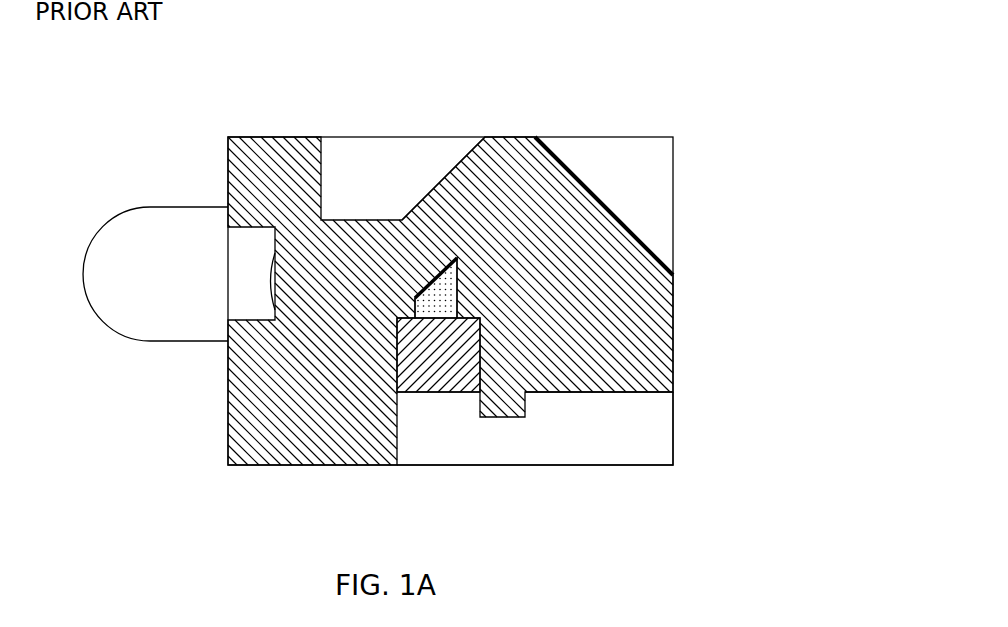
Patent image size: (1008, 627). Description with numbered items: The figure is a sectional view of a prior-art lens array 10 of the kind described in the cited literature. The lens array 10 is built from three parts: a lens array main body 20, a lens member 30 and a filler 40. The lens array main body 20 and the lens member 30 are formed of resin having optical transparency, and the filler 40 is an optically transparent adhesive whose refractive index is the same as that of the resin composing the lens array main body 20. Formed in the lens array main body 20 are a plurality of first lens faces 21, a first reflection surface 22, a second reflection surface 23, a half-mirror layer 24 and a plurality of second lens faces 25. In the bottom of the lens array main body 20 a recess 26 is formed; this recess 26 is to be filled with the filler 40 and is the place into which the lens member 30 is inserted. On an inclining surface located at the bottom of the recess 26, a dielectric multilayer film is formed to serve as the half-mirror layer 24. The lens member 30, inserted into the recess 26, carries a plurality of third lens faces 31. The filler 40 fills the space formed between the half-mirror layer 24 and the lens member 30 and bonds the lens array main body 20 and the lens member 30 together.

The lens array 10 is at (611, 86).
The lens array main body 20 is at (497, 137).
The first lens faces 21 is at (584, 393).
The first reflection surface 22 is at (627, 228).
The second reflection surface 23 is at (450, 172).
The half-mirror layer 24 is at (437, 270).
The second lens faces 25 is at (272, 274).
The recess 26 is at (407, 401).
The lens member 30 is at (452, 345).
The third lens faces 31 is at (438, 393).
The filler 40 is at (453, 293).